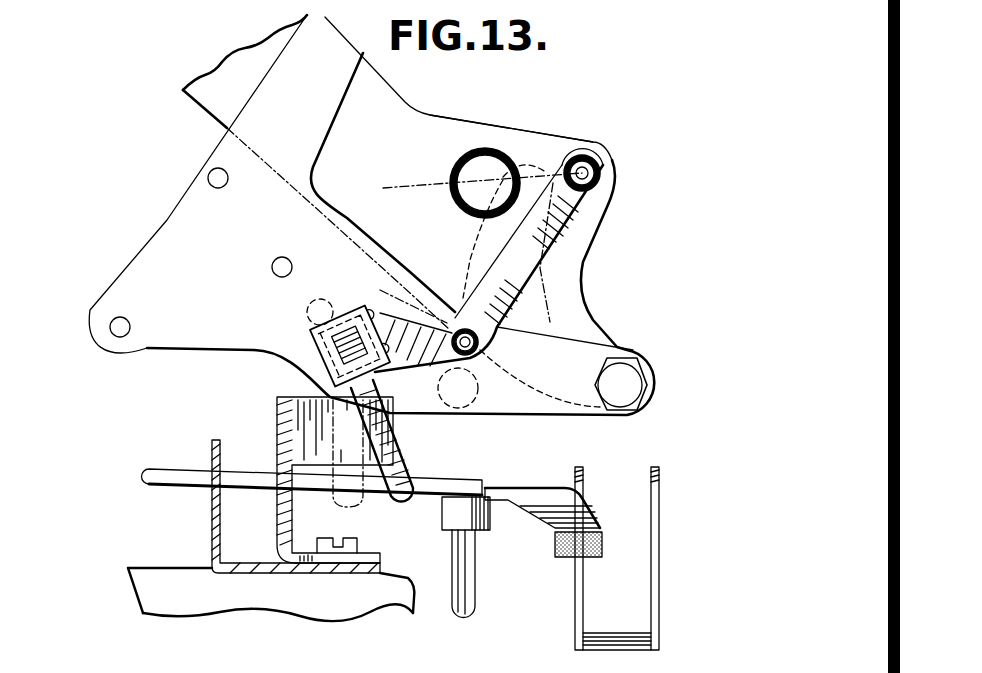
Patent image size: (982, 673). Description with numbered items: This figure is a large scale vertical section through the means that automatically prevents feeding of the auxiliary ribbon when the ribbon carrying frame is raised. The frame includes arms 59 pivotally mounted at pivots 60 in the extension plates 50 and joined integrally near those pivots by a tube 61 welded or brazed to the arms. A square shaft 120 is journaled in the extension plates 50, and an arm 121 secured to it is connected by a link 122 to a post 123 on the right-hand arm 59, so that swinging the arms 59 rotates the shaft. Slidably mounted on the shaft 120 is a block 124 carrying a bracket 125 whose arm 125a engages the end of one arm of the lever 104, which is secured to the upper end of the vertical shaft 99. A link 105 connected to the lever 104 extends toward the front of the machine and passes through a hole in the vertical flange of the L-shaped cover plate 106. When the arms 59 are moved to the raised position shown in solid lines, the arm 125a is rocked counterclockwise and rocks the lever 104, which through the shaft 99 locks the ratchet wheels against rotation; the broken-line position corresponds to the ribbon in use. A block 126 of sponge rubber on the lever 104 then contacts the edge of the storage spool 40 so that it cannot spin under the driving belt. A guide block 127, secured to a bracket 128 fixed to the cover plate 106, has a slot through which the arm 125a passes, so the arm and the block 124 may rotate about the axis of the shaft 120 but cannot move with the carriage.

The storage spool 40 is at (575, 610).
The extension plates 50 is at (173, 330).
The arms 59 is at (545, 145).
The pivots 60 is at (637, 392).
The tube 61 is at (488, 150).
The vertical shaft 99 is at (473, 592).
The lever 104 is at (515, 493).
The link 105 is at (248, 477).
The cover plate 106 is at (215, 513).
The square shaft 120 is at (313, 350).
The arm 121 is at (422, 298).
The link 122 is at (557, 232).
The post 123 is at (597, 168).
The block 124 is at (347, 307).
The bracket 125 is at (362, 307).
The arm 125a is at (413, 457).
The block 126 is at (602, 543).
The guide block 127 is at (310, 405).
The bracket 128 is at (280, 433).